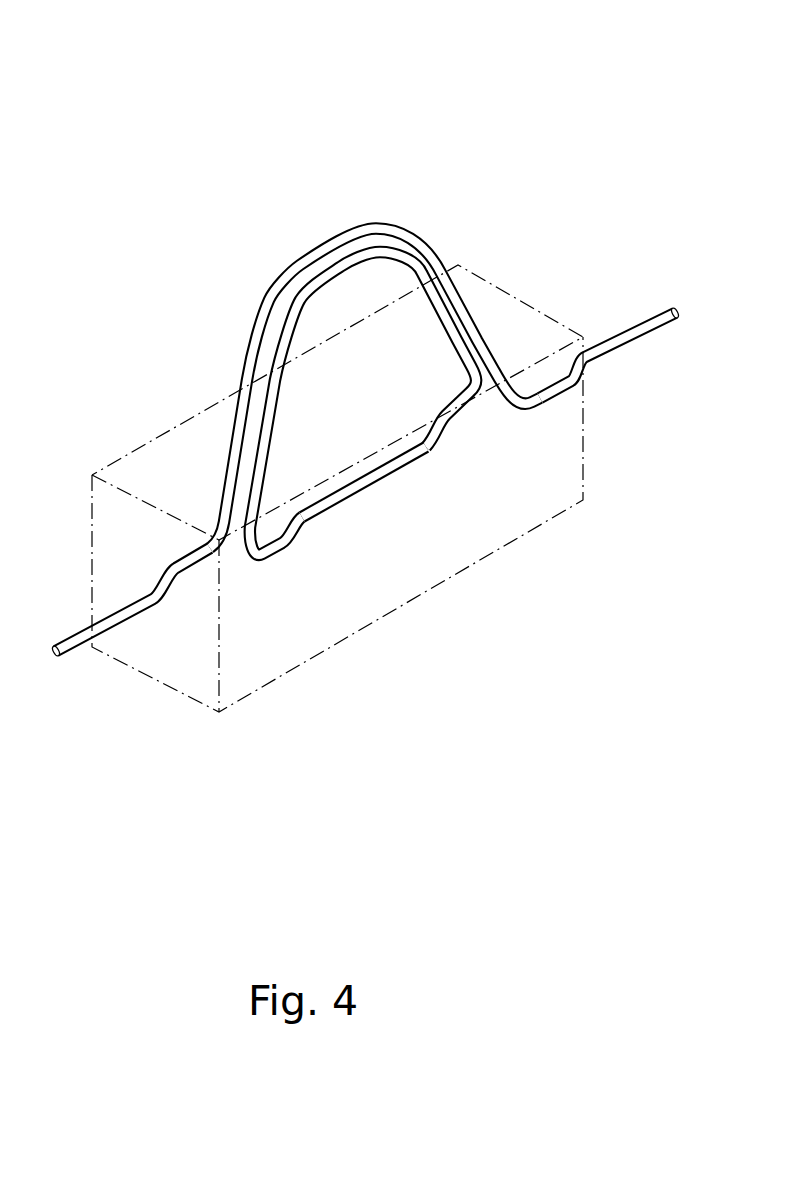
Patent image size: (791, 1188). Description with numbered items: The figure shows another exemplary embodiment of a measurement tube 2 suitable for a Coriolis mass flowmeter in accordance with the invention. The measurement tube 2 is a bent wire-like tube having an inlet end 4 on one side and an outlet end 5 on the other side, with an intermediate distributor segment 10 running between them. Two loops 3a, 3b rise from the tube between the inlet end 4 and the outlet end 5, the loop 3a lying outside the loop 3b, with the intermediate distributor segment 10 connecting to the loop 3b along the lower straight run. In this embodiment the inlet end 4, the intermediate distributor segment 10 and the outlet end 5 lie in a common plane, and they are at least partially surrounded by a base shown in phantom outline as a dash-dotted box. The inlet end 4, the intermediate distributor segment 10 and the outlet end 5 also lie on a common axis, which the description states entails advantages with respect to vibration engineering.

The measurement tube 2 is at (385, 398).
The outer loop 3a is at (318, 247).
The inner loop 3b is at (401, 248).
The inlet end 4 is at (80, 640).
The outlet end 5 is at (648, 327).
The intermediate distributor segment 10 is at (367, 480).